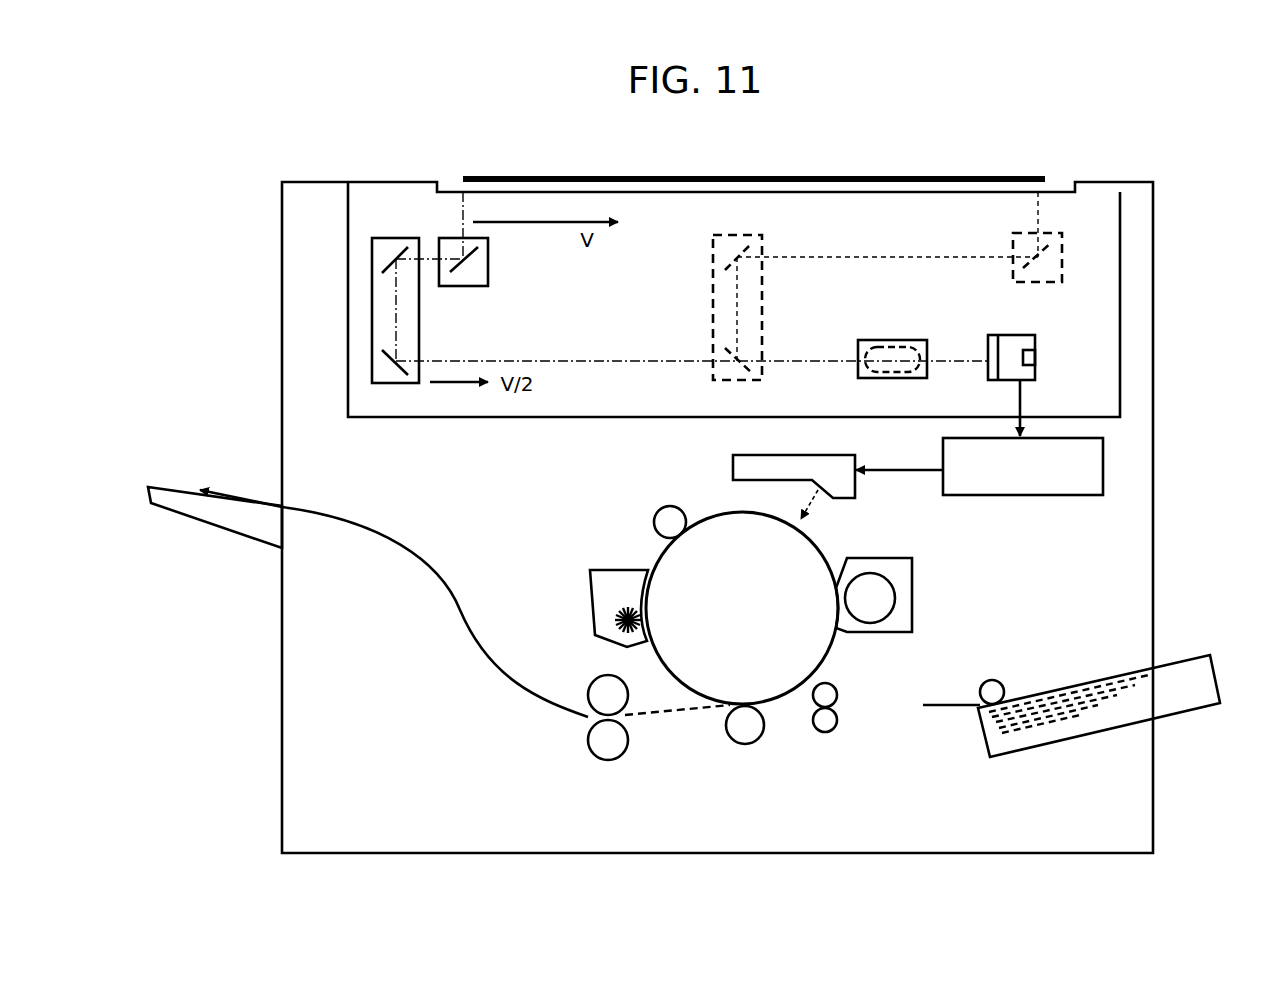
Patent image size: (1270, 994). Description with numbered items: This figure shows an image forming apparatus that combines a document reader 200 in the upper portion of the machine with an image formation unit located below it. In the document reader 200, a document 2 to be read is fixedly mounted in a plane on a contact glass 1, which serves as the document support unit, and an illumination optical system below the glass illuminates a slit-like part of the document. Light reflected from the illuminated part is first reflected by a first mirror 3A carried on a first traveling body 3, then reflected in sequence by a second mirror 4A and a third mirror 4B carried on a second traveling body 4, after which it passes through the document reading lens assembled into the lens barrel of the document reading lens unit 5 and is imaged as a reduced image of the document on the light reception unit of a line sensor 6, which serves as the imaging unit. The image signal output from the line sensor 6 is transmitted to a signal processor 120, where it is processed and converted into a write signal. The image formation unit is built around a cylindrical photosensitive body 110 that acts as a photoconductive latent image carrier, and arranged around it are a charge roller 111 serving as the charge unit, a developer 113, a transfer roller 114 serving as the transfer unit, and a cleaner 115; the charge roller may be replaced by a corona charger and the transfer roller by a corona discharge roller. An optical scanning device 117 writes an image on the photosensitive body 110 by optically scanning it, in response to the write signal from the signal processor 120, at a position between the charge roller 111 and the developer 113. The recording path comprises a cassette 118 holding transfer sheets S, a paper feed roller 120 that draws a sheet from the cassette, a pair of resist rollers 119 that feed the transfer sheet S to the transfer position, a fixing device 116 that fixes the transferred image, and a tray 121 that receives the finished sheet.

The contact glass 1 is at (637, 186).
The document 2 is at (529, 180).
The document reader 200 is at (882, 208).
The first traveling body 3 is at (488, 278).
The first mirror 3A is at (478, 257).
The second traveling body 4 is at (419, 305).
The second mirror 4A is at (405, 262).
The third mirror 4B is at (405, 372).
The document reading lens unit 5 is at (905, 330).
The line sensor 6 is at (1035, 345).
The photosensitive body 110 is at (812, 557).
The charge roller 111 is at (665, 515).
The developer 113 is at (912, 575).
The transfer roller 114 is at (745, 735).
The cleaner 115 is at (590, 592).
The fixing device 116 is at (598, 690).
The optical scanning device 117 is at (733, 468).
The cassette 118 is at (1088, 735).
The pair of resist rollers 119 is at (833, 698).
The signal processor 120 is at (1020, 495).
The tray 121 is at (205, 525).
The transfer sheet S is at (1107, 694).